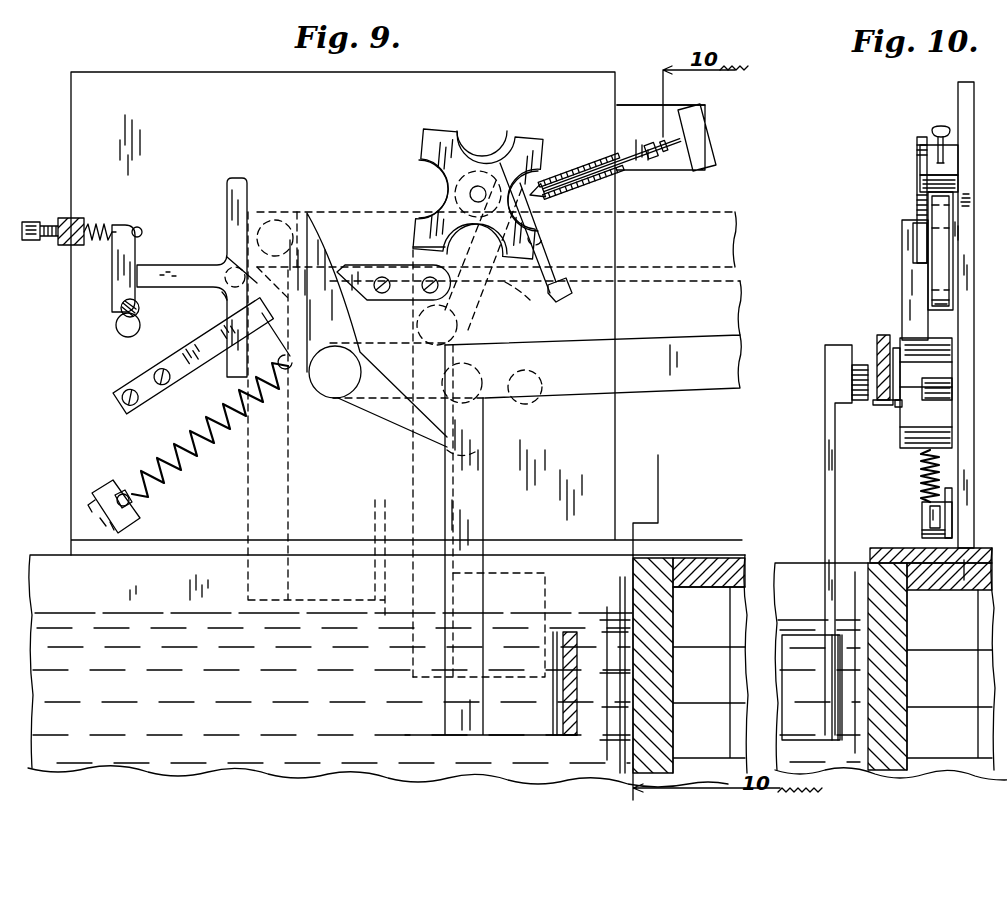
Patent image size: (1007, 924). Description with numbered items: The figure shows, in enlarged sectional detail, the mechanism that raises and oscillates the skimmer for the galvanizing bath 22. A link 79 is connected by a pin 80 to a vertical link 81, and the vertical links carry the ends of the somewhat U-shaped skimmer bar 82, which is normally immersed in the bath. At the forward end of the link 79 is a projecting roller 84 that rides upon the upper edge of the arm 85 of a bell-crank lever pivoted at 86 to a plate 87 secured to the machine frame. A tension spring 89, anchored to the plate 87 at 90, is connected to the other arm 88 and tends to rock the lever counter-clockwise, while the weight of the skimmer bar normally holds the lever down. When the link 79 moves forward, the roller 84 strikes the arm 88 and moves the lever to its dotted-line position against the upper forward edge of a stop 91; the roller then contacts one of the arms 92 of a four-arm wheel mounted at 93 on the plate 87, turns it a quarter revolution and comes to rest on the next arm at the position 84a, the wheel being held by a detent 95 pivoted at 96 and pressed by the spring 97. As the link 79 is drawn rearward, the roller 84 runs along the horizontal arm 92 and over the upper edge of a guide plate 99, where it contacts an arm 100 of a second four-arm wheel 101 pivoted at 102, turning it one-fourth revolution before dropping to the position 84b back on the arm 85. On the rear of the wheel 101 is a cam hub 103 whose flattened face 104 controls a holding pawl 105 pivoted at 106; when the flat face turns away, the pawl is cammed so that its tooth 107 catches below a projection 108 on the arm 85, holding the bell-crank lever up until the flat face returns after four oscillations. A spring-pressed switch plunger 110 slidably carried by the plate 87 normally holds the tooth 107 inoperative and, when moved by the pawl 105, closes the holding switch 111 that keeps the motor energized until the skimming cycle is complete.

In FIG. 9, the galvanizing bath 22 is at (80, 612).
In FIG. 10, the galvanizing bath 22 is at (786, 566).
In FIG. 9, the link 79 is at (694, 218).
In FIG. 10, the link 79 is at (882, 335).
In FIG. 10, the pin 80 is at (858, 385).
In FIG. 9, the vertical link 81 is at (292, 485).
In FIG. 10, the vertical link 81 is at (830, 472).
In FIG. 9, the skimmer bar 82 is at (368, 580).
In FIG. 10, the skimmer bar 82 is at (803, 655).
In FIG. 9, the roller 84 is at (483, 368).
In FIG. 10, the roller 84 is at (895, 405).
In FIG. 9, the roller position 84a is at (276, 218).
In FIG. 9, the roller position 84b is at (503, 285).
In FIG. 9, the arm of bell-crank lever 85 is at (401, 432).
In FIG. 10, the arm of bell-crank lever 85 is at (908, 425).
In FIG. 9, the pivot 86 is at (334, 384).
In FIG. 10, the pivot 86 is at (898, 352).
In FIG. 9, the plate 87 is at (76, 103).
In FIG. 10, the plate 87 is at (966, 163).
In FIG. 9, the arm of bell-crank lever 88 is at (222, 258).
In FIG. 10, the arm of bell-crank lever 88 is at (907, 250).
In FIG. 9, the tension spring 89 is at (200, 452).
In FIG. 10, the tension spring 89 is at (922, 475).
In FIG. 9, the spring connection 90 is at (113, 483).
In FIG. 10, the spring connection 90 is at (922, 521).
In FIG. 9, the stop 91 is at (213, 340).
In FIG. 9, the arm of four-arm wheel 92 is at (237, 183).
In FIG. 9, the pivot 93 is at (223, 293).
In FIG. 9, the detent 95 is at (113, 270).
In FIG. 9, the pivot 96 is at (117, 331).
In FIG. 9, the spring 97 is at (95, 231).
In FIG. 9, the guide plate 99 is at (398, 273).
In FIG. 9, the arm of second four-arm wheel 100 is at (416, 229).
In FIG. 9, the second four-arm wheel 101 is at (426, 157).
In FIG. 10, the second four-arm wheel 101 is at (920, 163).
In FIG. 9, the pivot 102 is at (477, 240).
In FIG. 9, the cam hub 103 is at (448, 190).
In FIG. 10, the cam hub 103 is at (918, 200).
In FIG. 9, the flattened face 104 is at (492, 168).
In FIG. 9, the holding pawl 105 is at (533, 205).
In FIG. 10, the holding pawl 105 is at (940, 278).
In FIG. 9, the pivot 106 is at (541, 241).
In FIG. 10, the pivot 106 is at (958, 248).
In FIG. 9, the tooth 107 is at (548, 293).
In FIG. 10, the tooth 107 is at (958, 303).
In FIG. 9, the projection 108 is at (506, 283).
In FIG. 10, the projection 108 is at (953, 398).
In FIG. 9, the spring-pressed switch plunger 110 is at (621, 142).
In FIG. 10, the spring-pressed switch plunger 110 is at (937, 153).
In FIG. 9, the holding switch 111 is at (665, 133).